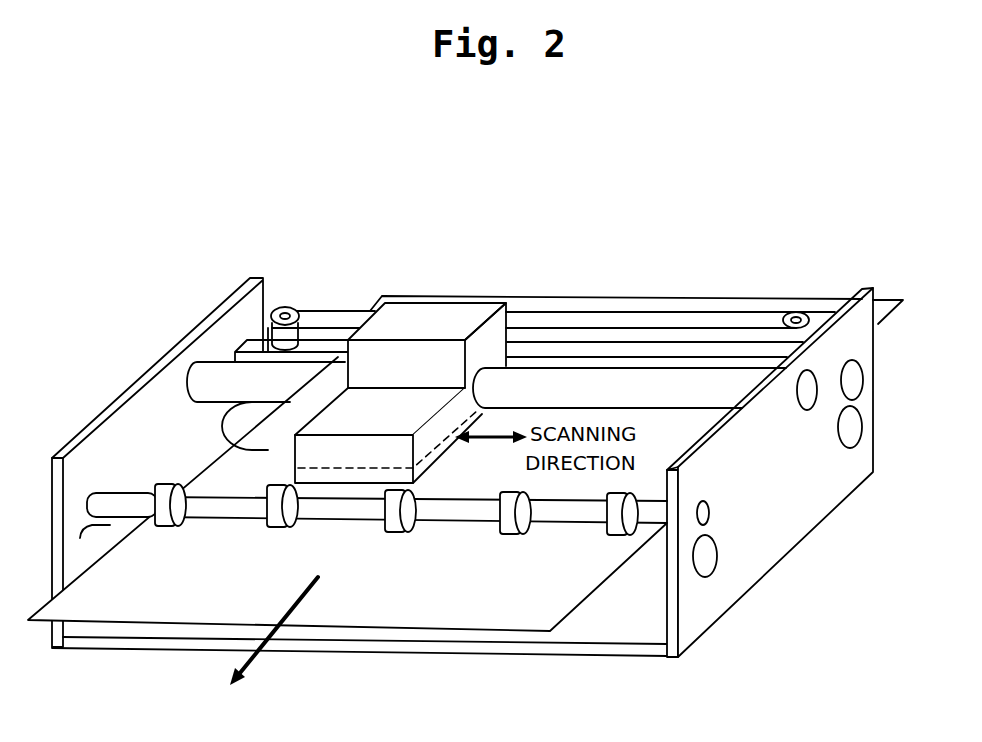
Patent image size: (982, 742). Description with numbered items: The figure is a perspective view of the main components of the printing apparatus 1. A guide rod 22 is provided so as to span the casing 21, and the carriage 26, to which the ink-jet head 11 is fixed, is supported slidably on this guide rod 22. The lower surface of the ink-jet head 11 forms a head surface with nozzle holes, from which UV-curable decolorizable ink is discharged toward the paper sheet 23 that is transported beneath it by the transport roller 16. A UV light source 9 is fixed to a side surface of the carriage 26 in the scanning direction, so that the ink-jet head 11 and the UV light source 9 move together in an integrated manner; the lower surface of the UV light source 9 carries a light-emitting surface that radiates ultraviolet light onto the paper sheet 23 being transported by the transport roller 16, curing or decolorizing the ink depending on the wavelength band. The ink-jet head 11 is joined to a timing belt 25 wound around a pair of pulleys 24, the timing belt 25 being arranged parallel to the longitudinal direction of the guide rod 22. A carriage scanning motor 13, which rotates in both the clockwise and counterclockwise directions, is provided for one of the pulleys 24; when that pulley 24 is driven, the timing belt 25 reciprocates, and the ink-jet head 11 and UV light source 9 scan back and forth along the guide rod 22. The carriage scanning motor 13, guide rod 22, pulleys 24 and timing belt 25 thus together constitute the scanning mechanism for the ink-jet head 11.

The printing apparatus 1 is at (465, 406).
The UV light source 9 is at (265, 423).
The ink-jet head 11 is at (367, 477).
The carriage scanning motor 13 is at (267, 350).
The transport roller 16 is at (603, 533).
The casing 21 is at (138, 383).
The guide rod 22 is at (588, 385).
The paper sheet 23 is at (515, 612).
The pulleys 24 is at (292, 310).
The timing belt 25 is at (680, 320).
The carriage 26 is at (447, 310).